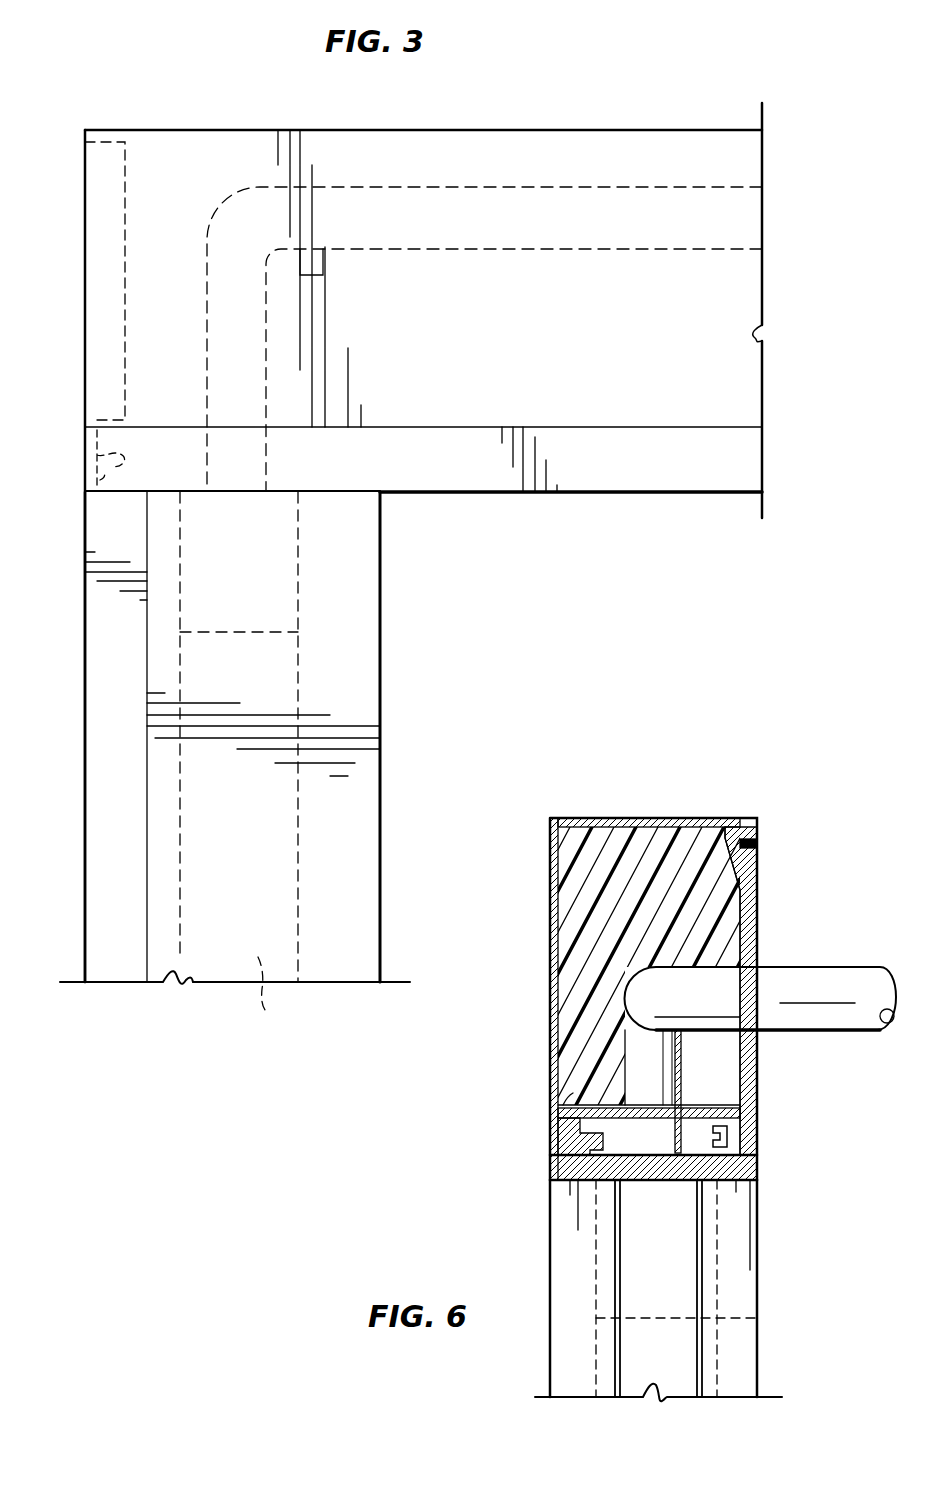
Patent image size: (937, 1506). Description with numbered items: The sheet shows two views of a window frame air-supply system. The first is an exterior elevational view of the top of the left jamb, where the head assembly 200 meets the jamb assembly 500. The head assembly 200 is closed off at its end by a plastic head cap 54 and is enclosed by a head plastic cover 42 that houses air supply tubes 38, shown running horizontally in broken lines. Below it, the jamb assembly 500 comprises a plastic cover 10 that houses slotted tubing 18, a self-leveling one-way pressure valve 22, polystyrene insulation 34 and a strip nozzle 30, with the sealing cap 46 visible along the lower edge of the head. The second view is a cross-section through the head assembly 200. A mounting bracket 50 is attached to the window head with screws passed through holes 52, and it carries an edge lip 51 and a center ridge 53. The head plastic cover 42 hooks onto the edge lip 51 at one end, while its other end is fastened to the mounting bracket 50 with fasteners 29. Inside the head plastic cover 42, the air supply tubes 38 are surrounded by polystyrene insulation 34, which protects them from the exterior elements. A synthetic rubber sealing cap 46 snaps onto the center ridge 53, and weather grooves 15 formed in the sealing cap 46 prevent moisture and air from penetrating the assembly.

In FIG. 3, the head assembly 200 is at (166, 138).
In FIG. 3, the head plastic cover 42 is at (566, 130).
In FIG. 6, the head plastic cover 42 is at (552, 1042).
In FIG. 3, the air supply tubes 38 is at (762, 226).
In FIG. 6, the air supply tubes 38 is at (862, 974).
In FIG. 3, the plastic head cap 54 is at (88, 325).
In FIG. 3, the jamb assembly 500 is at (92, 628).
In FIG. 3, the self-leveling one-way pressure valve 22 is at (254, 584).
In FIG. 6, the self-leveling one-way pressure valve 22 is at (578, 1218).
In FIG. 3, the synthetic rubber sealing cap 46 is at (588, 480).
In FIG. 6, the synthetic rubber sealing cap 46 is at (550, 1169).
In FIG. 3, the plastic cover 10 is at (384, 805).
In FIG. 6, the plastic cover 10 is at (550, 1294).
In FIG. 3, the slotted tubing 18 is at (264, 1009).
In FIG. 6, the slotted tubing 18 is at (596, 1352).
In FIG. 6, the edge lip 51 is at (756, 843).
In FIG. 6, the polystyrene insulation 34 is at (614, 888).
In FIG. 6, the holes 52 is at (740, 925).
In FIG. 6, the mounting bracket 50 is at (757, 1112).
In FIG. 6, the weather grooves 15 is at (563, 1105).
In FIG. 6, the center ridge 53 is at (550, 1133).
In FIG. 6, the fasteners 29 is at (752, 1142).
In FIG. 6, the strip nozzle 30 is at (682, 1398).